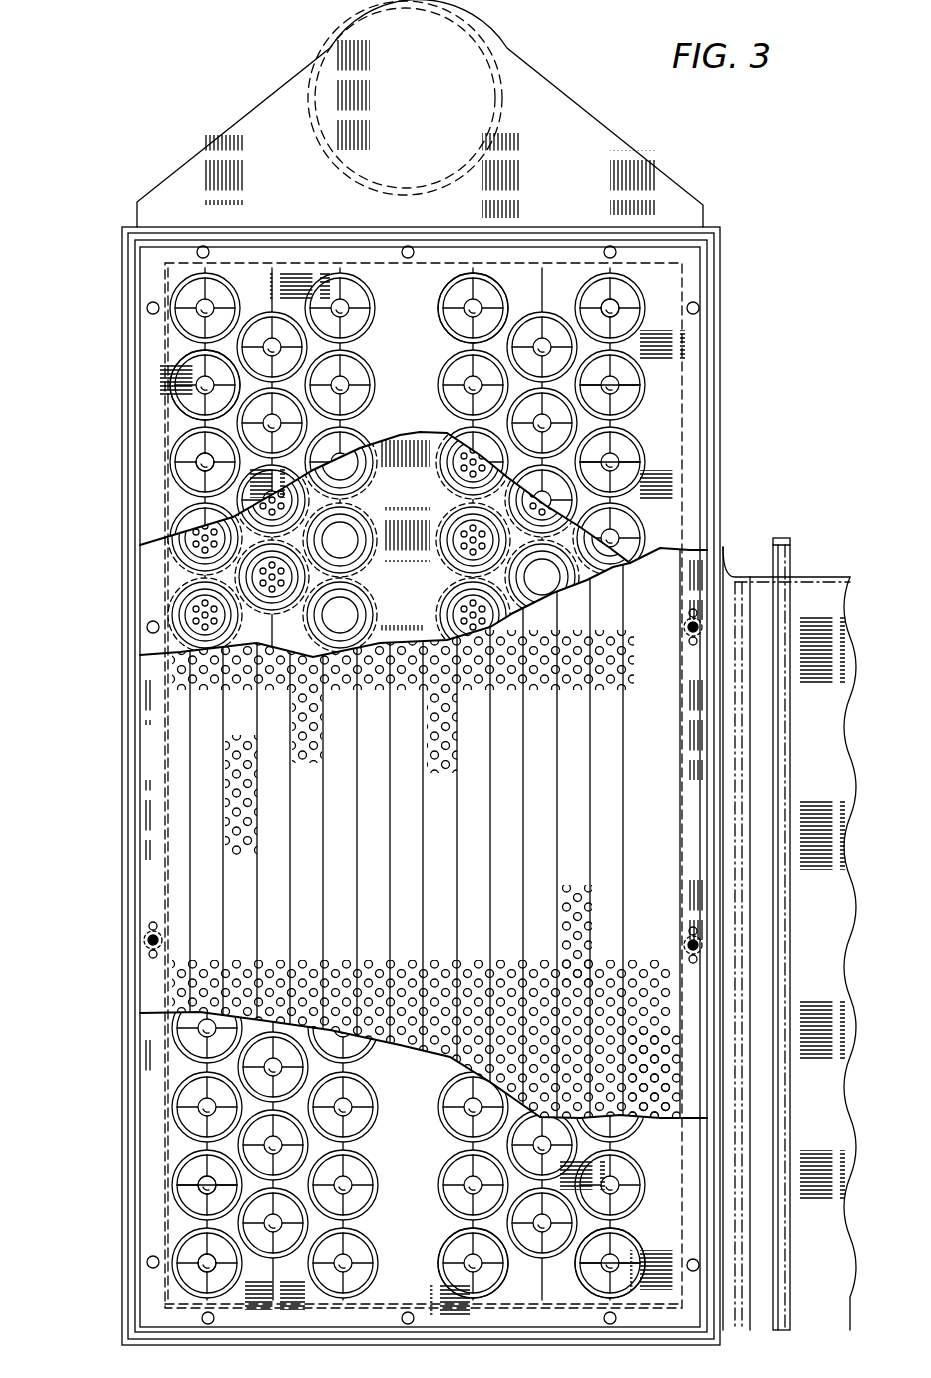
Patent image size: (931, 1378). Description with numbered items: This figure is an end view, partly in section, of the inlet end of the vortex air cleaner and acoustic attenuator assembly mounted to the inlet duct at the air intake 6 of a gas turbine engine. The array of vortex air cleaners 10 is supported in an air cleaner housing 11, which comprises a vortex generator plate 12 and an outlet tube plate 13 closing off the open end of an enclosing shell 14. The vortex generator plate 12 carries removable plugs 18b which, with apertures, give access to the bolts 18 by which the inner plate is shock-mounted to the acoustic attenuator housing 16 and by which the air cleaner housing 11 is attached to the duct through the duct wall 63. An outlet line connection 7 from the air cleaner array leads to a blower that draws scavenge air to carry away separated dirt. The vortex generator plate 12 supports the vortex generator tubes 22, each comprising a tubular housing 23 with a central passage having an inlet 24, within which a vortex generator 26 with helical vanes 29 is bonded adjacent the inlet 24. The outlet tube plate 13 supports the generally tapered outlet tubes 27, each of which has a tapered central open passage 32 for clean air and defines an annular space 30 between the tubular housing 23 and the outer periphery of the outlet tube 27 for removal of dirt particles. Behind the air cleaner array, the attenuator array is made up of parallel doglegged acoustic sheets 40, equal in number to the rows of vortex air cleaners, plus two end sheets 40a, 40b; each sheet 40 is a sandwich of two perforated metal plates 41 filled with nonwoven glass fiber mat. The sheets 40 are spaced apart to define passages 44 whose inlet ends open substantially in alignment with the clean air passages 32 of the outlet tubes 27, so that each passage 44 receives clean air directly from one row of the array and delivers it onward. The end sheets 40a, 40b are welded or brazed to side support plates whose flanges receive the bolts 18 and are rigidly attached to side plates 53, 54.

The air intake 6 is at (827, 590).
The outlet line connection 7 is at (416, 88).
The vortex air cleaners 10 is at (436, 327).
The air cleaner housing 11 is at (710, 305).
The vortex generator plate 12 is at (420, 419).
The outlet tube plate 13 is at (420, 626).
The enclosing shell 14 is at (702, 441).
The acoustic attenuator housing 16 is at (126, 775).
The bolts 18 is at (689, 628).
The removable plugs 18b is at (407, 246).
The vortex generator tubes 22 is at (594, 267).
The tubular housing 23 is at (445, 470).
The inlet 24 is at (590, 293).
The vortex generator 26 is at (614, 306).
The outlet tubes 27 is at (445, 552).
The vanes 29 is at (630, 389).
The annular space 30 is at (356, 650).
The tapered central open passage 32 is at (343, 650).
The acoustic sheets 40 is at (214, 740).
The end sheet 40a is at (185, 975).
The end sheet 40b is at (681, 683).
The perforated metal plates 41 is at (577, 907).
The passages 44 is at (210, 815).
The side plate 53 is at (722, 385).
The side plate 54 is at (141, 688).
The duct wall 63 is at (737, 576).